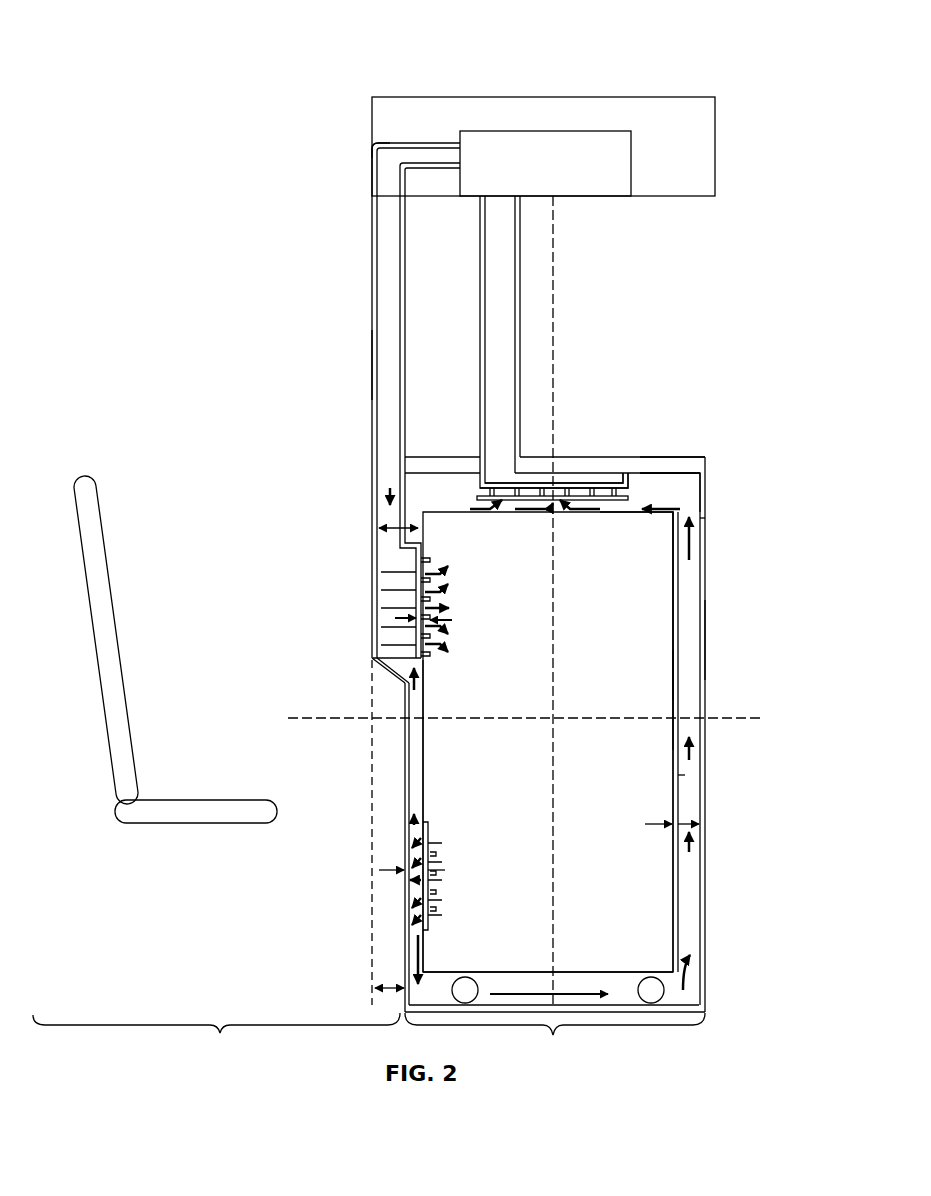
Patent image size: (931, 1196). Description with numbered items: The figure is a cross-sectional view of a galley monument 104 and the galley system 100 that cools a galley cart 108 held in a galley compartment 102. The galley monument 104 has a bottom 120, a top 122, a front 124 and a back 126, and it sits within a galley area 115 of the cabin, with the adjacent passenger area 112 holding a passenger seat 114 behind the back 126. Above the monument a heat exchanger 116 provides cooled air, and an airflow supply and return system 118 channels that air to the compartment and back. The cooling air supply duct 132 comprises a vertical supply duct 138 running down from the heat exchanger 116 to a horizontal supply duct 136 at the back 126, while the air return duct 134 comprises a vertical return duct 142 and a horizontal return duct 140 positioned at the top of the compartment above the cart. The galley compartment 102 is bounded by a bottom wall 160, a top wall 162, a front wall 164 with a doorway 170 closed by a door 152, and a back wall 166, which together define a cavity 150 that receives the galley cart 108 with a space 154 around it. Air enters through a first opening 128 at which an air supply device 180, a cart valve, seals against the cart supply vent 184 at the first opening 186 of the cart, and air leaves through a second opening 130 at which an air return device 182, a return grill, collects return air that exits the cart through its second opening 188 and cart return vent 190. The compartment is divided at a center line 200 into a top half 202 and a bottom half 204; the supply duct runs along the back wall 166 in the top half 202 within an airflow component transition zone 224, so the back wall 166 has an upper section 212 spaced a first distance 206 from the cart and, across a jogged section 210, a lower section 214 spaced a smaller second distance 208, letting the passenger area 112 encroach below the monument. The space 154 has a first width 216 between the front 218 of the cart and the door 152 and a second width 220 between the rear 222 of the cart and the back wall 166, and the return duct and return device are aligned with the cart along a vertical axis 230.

The galley system 100 is at (632, 40).
The galley compartment 102 is at (707, 498).
The galley monument 104 is at (737, 103).
The galley cart 108 is at (650, 705).
The passenger area 112 is at (216, 1039).
The passenger seat 114 is at (112, 768).
The galley area 115 is at (555, 1039).
The heat exchanger 116 is at (540, 150).
The airflow supply and return system 118 is at (381, 143).
The bottom 120 is at (655, 1012).
The top 122 is at (650, 97).
The front 124 is at (705, 460).
The back 126 is at (372, 370).
The first opening 128 is at (376, 660).
The second opening 130 is at (582, 488).
The cooling air supply duct 132 is at (381, 305).
The air return duct 134 is at (497, 330).
The horizontal supply duct 136 is at (388, 578).
The vertical supply duct 138 is at (388, 392).
The horizontal return duct 140 is at (565, 473).
The vertical return duct 142 is at (500, 423).
The cavity 150 is at (660, 498).
The door 152 is at (705, 635).
The space 154 is at (690, 778).
The bottom wall 160 is at (573, 1002).
The top wall 162 is at (660, 462).
The front wall 164 is at (705, 487).
The back wall 166 is at (403, 786).
The doorway 170 is at (707, 518).
The air supply device 180 is at (417, 618).
The air return device 182 is at (602, 505).
The cart supply vent 184 is at (432, 621).
The first opening of galley cart 186 is at (433, 634).
The second opening of galley cart 188 is at (430, 842).
The cart return vent 190 is at (417, 892).
The center line 200 is at (548, 742).
The top half 202 is at (650, 672).
The bottom half 204 is at (664, 779).
The first distance 206 is at (385, 528).
The second distance 208 is at (415, 822).
The jogged section 210 is at (390, 682).
The upper section 212 is at (371, 605).
The lower section 214 is at (404, 769).
The first width 216 is at (707, 825).
The front of galley cart 218 is at (700, 850).
The second width 220 is at (445, 870).
The rear of galley cart 222 is at (424, 953).
The airflow component transition zone 224 is at (412, 508).
The vertical axis 230 is at (555, 622).